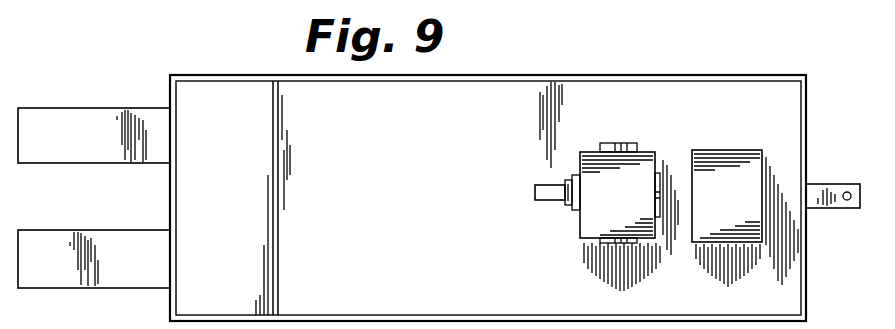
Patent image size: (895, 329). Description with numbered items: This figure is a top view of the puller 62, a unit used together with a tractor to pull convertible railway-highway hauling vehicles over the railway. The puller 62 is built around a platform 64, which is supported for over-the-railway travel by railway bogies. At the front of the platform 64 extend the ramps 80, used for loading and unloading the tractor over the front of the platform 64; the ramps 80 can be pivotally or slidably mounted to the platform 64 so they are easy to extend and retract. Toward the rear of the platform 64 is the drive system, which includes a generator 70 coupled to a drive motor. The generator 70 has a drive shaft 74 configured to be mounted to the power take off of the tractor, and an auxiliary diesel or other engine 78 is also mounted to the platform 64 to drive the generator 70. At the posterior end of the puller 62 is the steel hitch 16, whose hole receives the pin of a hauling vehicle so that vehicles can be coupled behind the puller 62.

The puller 62 is at (443, 112).
The platform 64 is at (244, 204).
The generator 70 is at (640, 163).
The drive shaft 74 is at (553, 187).
The auxiliary engine 78 is at (747, 157).
The ramps 80 is at (102, 150).
The steel hitch 16 is at (842, 185).